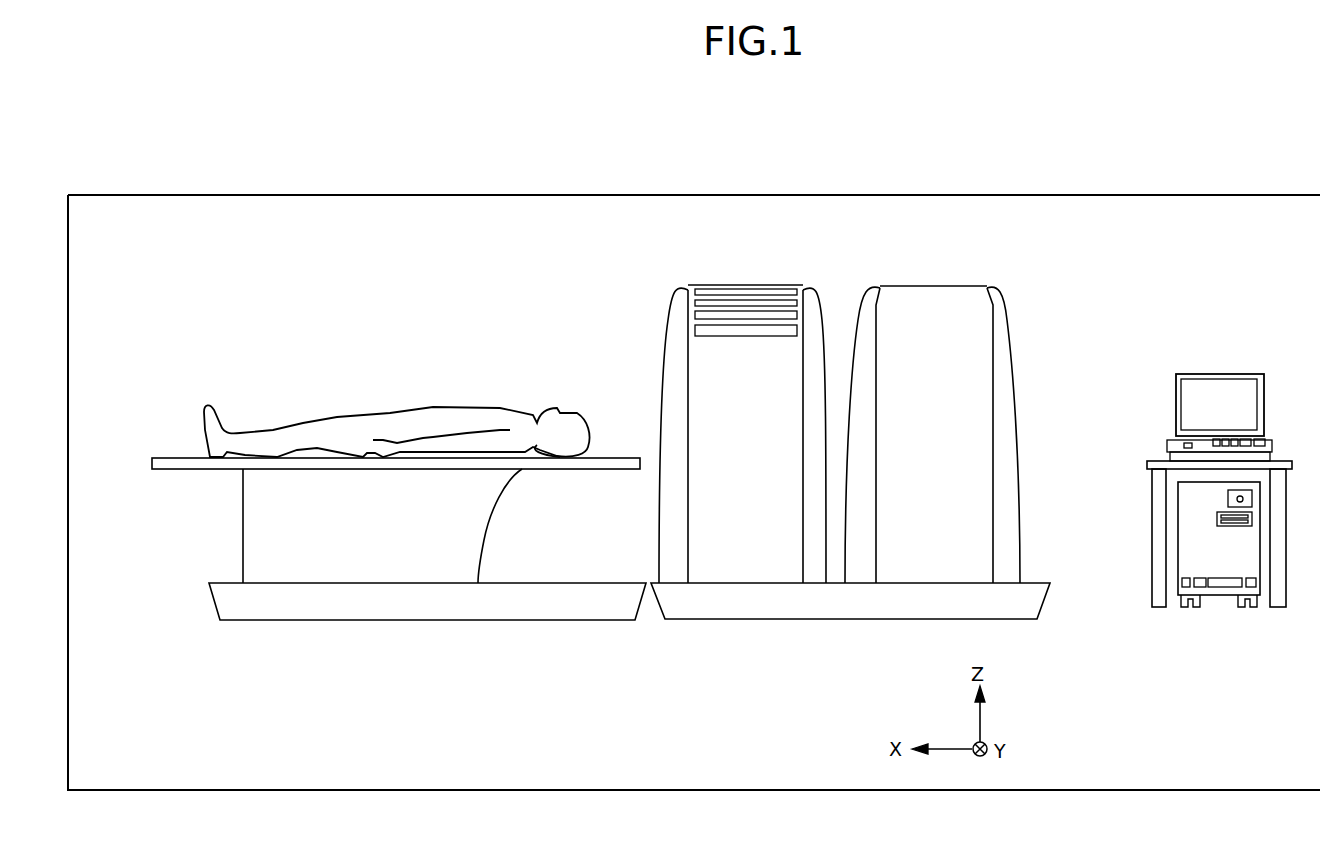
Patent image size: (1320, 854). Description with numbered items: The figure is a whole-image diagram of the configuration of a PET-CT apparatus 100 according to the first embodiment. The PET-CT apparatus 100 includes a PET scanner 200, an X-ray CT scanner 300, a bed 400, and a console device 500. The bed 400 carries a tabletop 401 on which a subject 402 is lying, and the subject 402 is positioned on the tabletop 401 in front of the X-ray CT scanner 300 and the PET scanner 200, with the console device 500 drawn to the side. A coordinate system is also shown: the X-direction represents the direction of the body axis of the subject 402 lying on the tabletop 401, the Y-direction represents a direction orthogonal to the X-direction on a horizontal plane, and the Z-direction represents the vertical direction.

The PET-CT apparatus 100 is at (601, 176).
The PET scanner 200 is at (930, 285).
The X-ray CT scanner 300 is at (741, 285).
The bed 400 is at (252, 556).
The tabletop 401 is at (152, 464).
The subject 402 is at (424, 400).
The console device 500 is at (1215, 374).